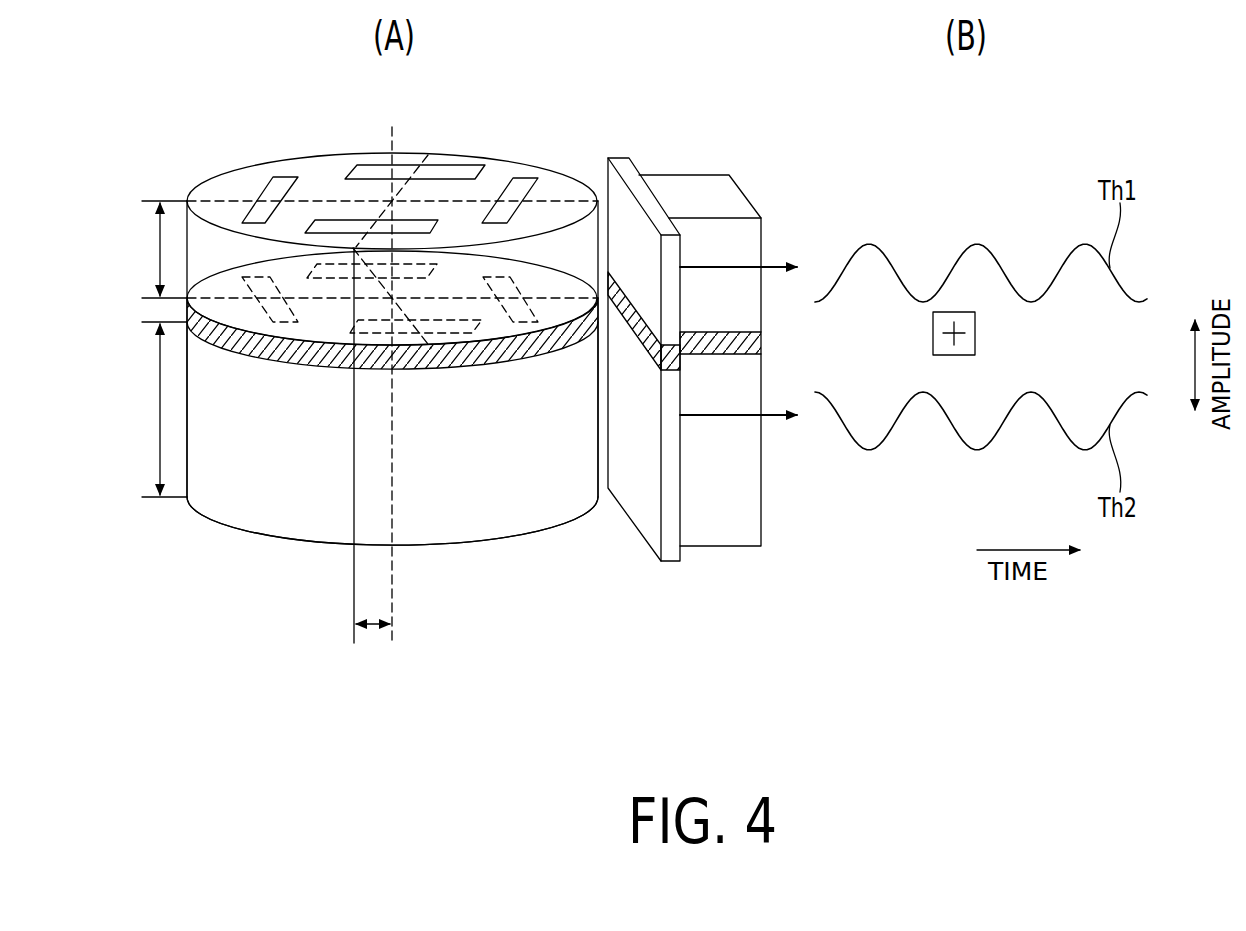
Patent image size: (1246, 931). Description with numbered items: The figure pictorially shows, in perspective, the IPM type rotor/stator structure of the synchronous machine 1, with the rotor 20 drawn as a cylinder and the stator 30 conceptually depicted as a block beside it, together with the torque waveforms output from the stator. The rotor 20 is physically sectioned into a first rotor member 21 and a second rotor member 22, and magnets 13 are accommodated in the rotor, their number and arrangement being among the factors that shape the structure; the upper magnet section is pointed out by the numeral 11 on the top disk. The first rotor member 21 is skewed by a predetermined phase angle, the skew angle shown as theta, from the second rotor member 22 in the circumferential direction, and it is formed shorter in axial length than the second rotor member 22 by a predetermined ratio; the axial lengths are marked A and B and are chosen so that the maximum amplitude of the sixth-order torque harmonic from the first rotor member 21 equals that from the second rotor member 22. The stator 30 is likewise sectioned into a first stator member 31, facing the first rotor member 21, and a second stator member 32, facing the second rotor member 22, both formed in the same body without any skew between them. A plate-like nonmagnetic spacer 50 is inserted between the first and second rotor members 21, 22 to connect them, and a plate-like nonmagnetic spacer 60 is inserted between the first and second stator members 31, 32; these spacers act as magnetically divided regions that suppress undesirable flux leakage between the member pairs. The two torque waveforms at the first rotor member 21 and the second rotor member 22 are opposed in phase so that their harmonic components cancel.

The synchronous machine 1 is at (798, 650).
The first magnet 11 is at (392, 208).
The magnet 13 is at (455, 165).
The rotor 20 is at (275, 541).
The first rotor member 21 is at (232, 185).
The second rotor member 22 is at (232, 510).
The stator 30 is at (718, 376).
The first stator member 31 is at (698, 185).
The second stator member 32 is at (718, 540).
The nonmagnetic spacer 50 is at (450, 355).
The nonmagnetic spacer 60 is at (719, 346).